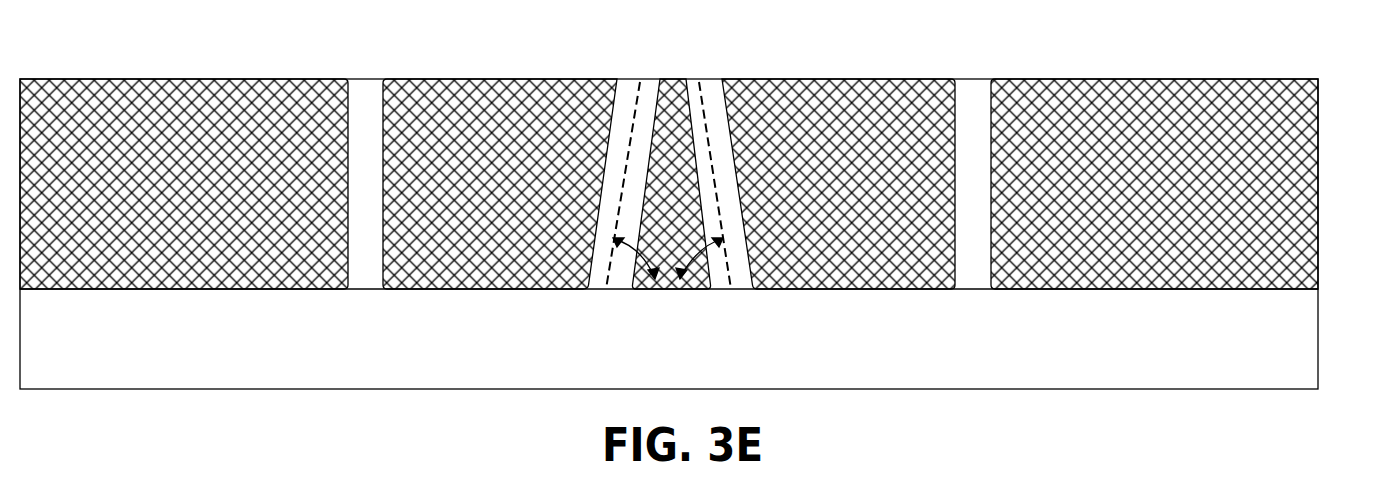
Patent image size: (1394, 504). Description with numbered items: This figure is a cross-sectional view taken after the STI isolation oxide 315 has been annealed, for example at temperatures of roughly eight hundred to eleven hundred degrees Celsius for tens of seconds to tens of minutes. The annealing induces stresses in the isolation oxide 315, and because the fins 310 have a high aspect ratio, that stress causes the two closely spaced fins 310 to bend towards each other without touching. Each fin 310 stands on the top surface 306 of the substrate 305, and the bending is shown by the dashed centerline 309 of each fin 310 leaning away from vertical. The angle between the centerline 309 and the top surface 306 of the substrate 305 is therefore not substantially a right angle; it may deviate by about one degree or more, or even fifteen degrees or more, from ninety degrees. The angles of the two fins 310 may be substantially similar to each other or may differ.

The substrate 305 is at (1307, 344).
The top surface of substrate 306 is at (1276, 283).
The isolation oxide 315 is at (1309, 141).
The fin 310 is at (731, 80).
The centerline of the fin 309 is at (625, 127).